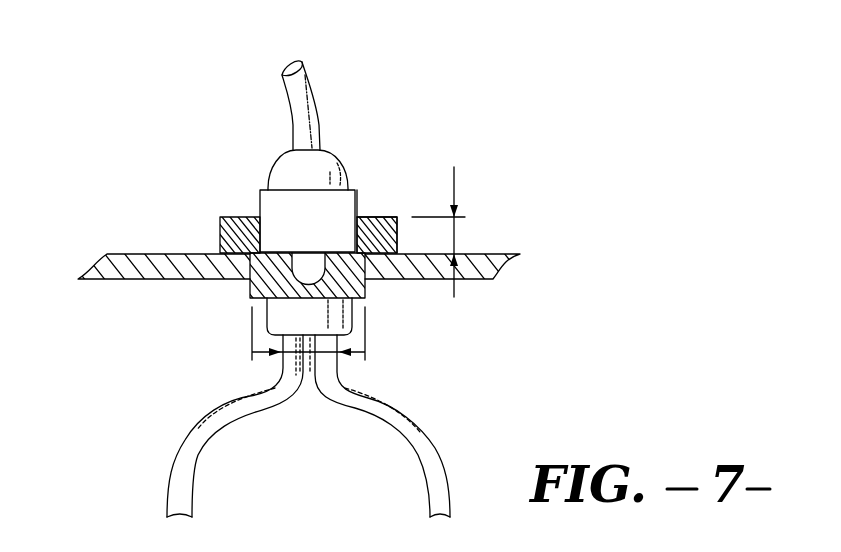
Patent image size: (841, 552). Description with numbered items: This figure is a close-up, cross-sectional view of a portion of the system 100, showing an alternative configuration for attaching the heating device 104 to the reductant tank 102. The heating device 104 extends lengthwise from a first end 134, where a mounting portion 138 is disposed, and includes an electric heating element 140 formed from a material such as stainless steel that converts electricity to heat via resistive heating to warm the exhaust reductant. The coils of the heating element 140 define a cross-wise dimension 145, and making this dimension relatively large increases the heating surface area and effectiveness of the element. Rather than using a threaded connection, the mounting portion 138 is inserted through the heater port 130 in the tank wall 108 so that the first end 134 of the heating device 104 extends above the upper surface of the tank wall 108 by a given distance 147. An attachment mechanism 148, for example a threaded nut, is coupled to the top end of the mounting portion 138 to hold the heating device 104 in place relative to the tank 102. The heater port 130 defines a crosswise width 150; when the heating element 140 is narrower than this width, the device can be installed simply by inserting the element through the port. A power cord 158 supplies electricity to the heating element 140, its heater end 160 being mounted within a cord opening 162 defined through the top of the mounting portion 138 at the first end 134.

The system 100 is at (304, 277).
The tank 102 is at (141, 252).
The heating device 104 is at (393, 332).
The tank wall 108 is at (480, 253).
The heater port 130 is at (238, 262).
The first end 134 is at (363, 216).
The mounting portion 138 is at (352, 288).
The electric heating element 140 is at (185, 432).
The cross-wise dimension 145 is at (367, 473).
The distance 147 is at (455, 180).
The attachment mechanism 148 is at (397, 237).
The crosswise width 150 is at (283, 368).
The power cord 158 is at (318, 100).
The heater end 160 is at (283, 165).
The cord opening 162 is at (258, 205).